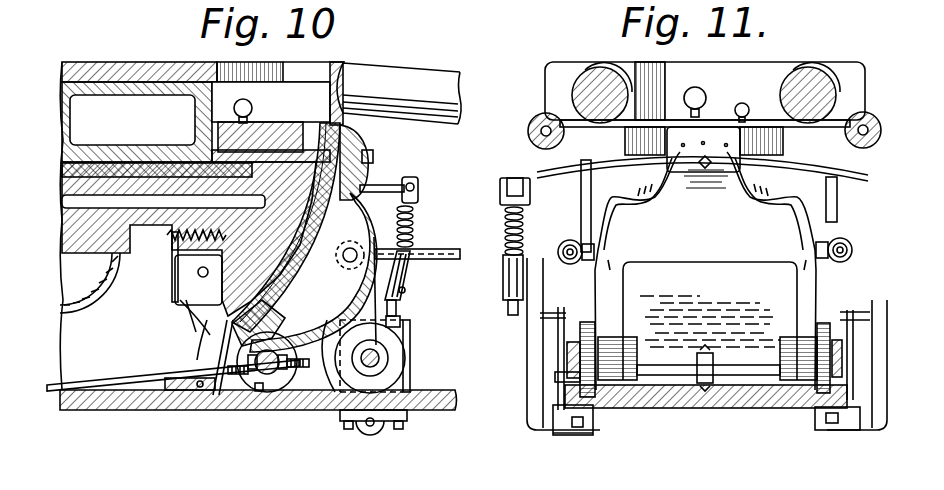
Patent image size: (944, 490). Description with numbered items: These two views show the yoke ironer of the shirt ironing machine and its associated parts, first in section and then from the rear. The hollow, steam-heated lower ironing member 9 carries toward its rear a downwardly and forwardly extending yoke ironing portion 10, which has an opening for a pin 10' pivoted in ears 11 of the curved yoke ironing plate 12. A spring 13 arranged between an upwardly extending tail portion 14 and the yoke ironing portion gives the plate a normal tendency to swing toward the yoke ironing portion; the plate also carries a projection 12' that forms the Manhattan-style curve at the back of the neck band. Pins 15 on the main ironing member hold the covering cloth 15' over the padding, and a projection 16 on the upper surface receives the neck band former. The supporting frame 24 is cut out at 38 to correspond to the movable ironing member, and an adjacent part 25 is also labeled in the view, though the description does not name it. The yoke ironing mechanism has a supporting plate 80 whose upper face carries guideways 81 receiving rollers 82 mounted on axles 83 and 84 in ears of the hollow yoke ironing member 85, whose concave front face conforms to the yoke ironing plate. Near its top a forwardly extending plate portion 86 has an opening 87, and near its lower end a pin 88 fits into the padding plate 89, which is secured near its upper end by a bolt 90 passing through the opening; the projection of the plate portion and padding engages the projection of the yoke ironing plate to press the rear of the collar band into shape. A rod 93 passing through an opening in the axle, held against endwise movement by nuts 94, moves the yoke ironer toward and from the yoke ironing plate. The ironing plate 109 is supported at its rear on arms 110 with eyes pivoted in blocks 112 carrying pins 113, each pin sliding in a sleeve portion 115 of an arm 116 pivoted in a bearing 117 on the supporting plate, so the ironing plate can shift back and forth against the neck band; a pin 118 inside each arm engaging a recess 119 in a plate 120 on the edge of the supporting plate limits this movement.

In FIG. 10, the lower ironing member 9 is at (112, 215).
In FIG. 10, the yoke ironing portion 10 is at (187, 346).
In FIG. 10, the pin 10' is at (157, 320).
In FIG. 10, the ears 11 is at (190, 306).
In FIG. 10, the yoke ironing plate 12 is at (190, 415).
In FIG. 10, the projection 12' is at (302, 180).
In FIG. 10, the spring 13 is at (178, 258).
In FIG. 10, the tail portion 14 is at (167, 232).
In FIG. 10, the pins 15 is at (215, 395).
In FIG. 10, the covering cloth 15' is at (315, 387).
In FIG. 10, the projection 16 is at (352, 120).
In FIG. 10, the supporting frame 24 is at (141, 76).
In FIG. 10, the casing 25 is at (381, 78).
In FIG. 10, the cut out 38 is at (267, 65).
In FIG. 10, the supporting plate 80 is at (141, 411).
In FIG. 11, the supporting plate 80 is at (678, 400).
In FIG. 10, the guideways 81 is at (291, 389).
In FIG. 11, the guideways 81 is at (600, 392).
In FIG. 10, the rollers 82 is at (399, 369).
In FIG. 11, the rollers 82 is at (822, 380).
In FIG. 10, the axle 83 is at (386, 355).
In FIG. 10, the axle 84 is at (262, 396).
In FIG. 10, the yoke ironing member 85 is at (383, 235).
In FIG. 11, the yoke ironing member 85 is at (740, 272).
In FIG. 10, the plate portion 86 is at (374, 154).
In FIG. 10, the opening 87 is at (358, 135).
In FIG. 10, the pin 88 is at (264, 323).
In FIG. 10, the padding plate 89 is at (346, 270).
In FIG. 10, the bolt 90 is at (372, 168).
In FIG. 10, the rod 93 is at (89, 391).
In FIG. 10, the nuts 94 is at (253, 390).
In FIG. 10, the ironing plate 109 is at (117, 158).
In FIG. 11, the ironing plate 109 is at (641, 168).
In FIG. 11, the arms 110 is at (540, 170).
In FIG. 10, the blocks 112 is at (419, 186).
In FIG. 11, the blocks 112 is at (528, 208).
In FIG. 11, the pins 113 is at (506, 240).
In FIG. 10, the sleeve portion 115 is at (406, 283).
In FIG. 11, the sleeve portion 115 is at (506, 277).
In FIG. 11, the arm 116 is at (527, 357).
In FIG. 10, the bearing 117 is at (403, 418).
In FIG. 11, the bearing 117 is at (582, 436).
In FIG. 10, the pin 118 is at (401, 322).
In FIG. 11, the pin 118 is at (548, 318).
In FIG. 10, the recess 119 is at (405, 291).
In FIG. 10, the plate 120 is at (411, 381).
In FIG. 11, the plate 120 is at (555, 380).